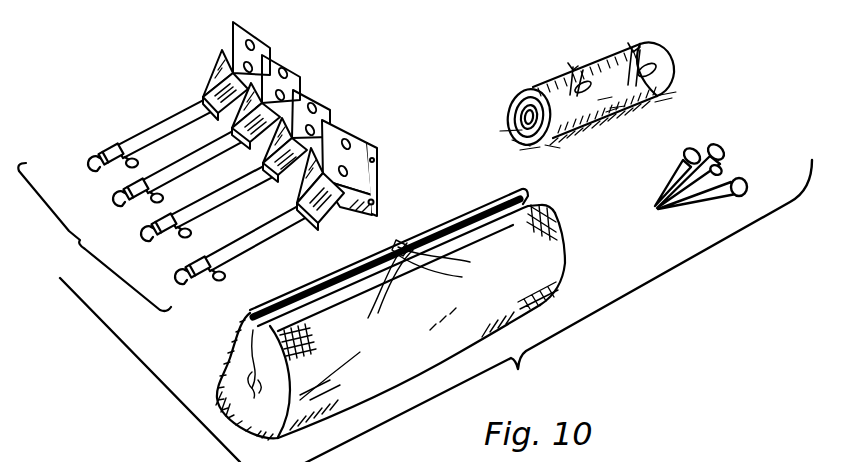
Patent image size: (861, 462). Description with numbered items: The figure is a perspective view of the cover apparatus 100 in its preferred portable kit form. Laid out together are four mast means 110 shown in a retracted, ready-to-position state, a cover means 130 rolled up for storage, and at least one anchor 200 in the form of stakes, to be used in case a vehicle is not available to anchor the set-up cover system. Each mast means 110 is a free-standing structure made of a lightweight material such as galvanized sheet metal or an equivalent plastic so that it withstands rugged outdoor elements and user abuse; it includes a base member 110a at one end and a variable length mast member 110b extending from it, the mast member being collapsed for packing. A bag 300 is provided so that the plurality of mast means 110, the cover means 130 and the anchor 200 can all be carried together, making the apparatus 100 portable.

The cover apparatus 100 is at (436, 311).
The mast means 110 is at (197, 166).
The base member 110a is at (262, 42).
The variable length mast member 110b is at (145, 124).
The cover means 130 is at (674, 68).
The anchor 200 is at (723, 148).
The bag 300 is at (560, 238).